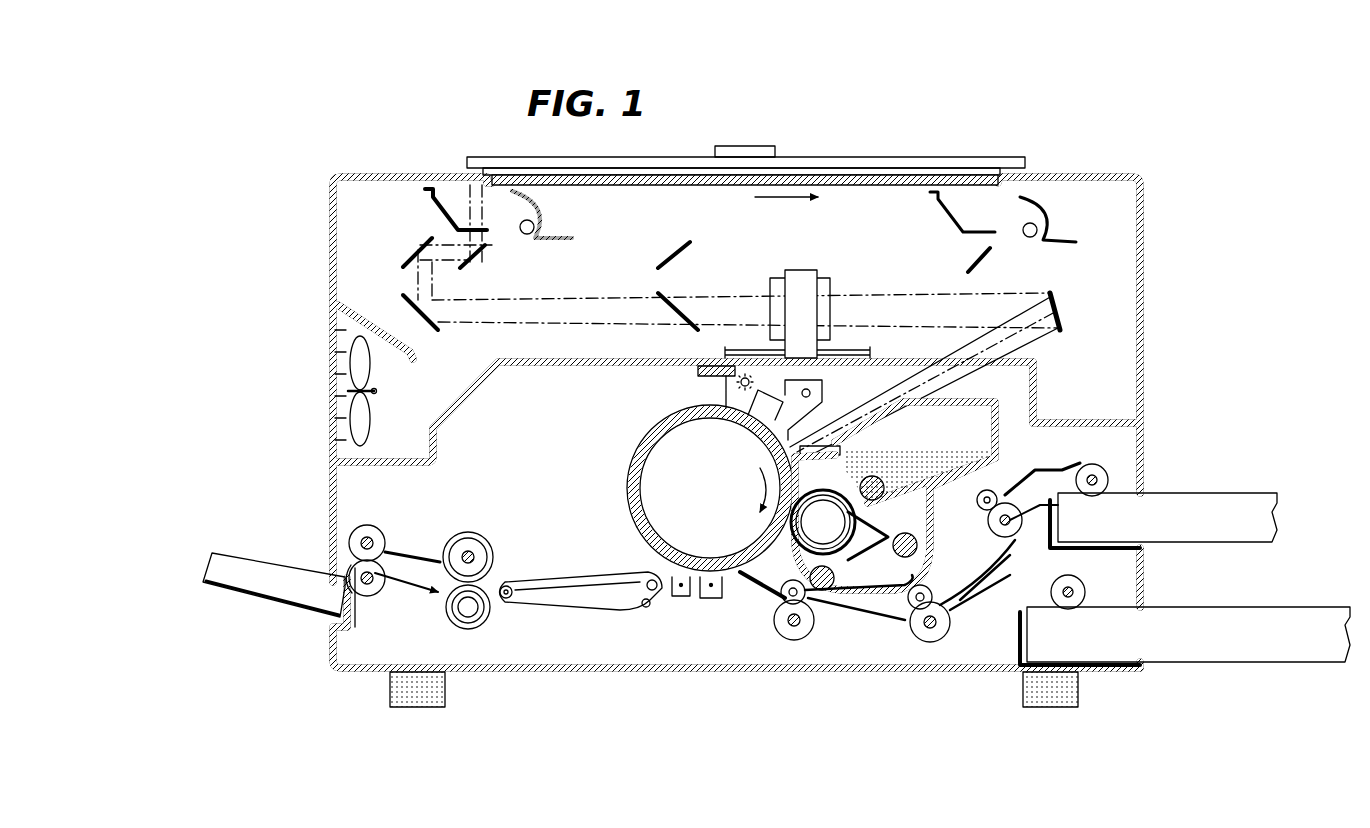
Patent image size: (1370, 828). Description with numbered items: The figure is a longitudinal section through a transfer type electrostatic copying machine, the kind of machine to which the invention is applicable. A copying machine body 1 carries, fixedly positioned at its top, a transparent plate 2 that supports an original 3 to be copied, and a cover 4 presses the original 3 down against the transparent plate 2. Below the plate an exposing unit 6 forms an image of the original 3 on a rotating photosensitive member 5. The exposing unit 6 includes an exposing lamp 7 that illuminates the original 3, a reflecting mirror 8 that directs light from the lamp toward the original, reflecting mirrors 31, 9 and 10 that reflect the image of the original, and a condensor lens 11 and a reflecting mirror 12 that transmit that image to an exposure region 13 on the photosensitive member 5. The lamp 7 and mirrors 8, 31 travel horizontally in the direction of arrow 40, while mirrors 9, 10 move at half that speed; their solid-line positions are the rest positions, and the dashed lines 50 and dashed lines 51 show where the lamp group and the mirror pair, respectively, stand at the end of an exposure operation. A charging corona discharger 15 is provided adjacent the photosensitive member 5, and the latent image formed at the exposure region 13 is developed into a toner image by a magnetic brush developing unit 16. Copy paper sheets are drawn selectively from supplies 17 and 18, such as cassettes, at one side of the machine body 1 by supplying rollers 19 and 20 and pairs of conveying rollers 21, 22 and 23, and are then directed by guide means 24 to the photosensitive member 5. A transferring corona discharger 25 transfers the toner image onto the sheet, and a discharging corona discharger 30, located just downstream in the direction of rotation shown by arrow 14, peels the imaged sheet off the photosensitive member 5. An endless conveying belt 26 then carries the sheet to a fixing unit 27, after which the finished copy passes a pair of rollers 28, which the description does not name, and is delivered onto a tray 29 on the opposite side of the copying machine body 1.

The copying machine body 1 is at (1143, 227).
The transparent plate 2 is at (940, 175).
The original 3 is at (884, 168).
The cover 4 is at (820, 157).
The photosensitive member 5 is at (640, 442).
The exposing unit 6 is at (414, 220).
The exposing lamp 7 is at (527, 235).
The reflecting mirror 8 is at (540, 217).
The reflecting mirror 9 is at (406, 252).
The reflecting mirror 10 is at (405, 306).
The condensor lens 11 is at (805, 275).
The reflecting mirror 12 is at (1062, 311).
The exposure region 13 is at (790, 451).
The arrow 14 is at (756, 492).
The charging corona discharger 15 is at (810, 372).
The magnetic brush developing unit 16 is at (912, 497).
The supply 17 is at (1192, 494).
The supply 18 is at (1198, 610).
The supplying roller 19 is at (1094, 470).
The supplying roller 20 is at (1076, 586).
The pair of conveying rollers 21 is at (1005, 503).
The pair of conveying rollers 22 is at (925, 625).
The pair of conveying rollers 23 is at (800, 622).
The guide means 24 is at (752, 598).
The transferring corona discharger 25 is at (712, 600).
The endless conveying belt 26 is at (582, 578).
The fixing unit 27 is at (482, 545).
The discharge rollers 28 is at (390, 570).
The tray 29 is at (270, 562).
The discharging corona discharger 30 is at (681, 600).
The reflecting mirror 31 is at (472, 262).
The arrow 40 is at (790, 198).
The dashed lines 50 is at (998, 240).
The dashed lines 51 is at (680, 300).